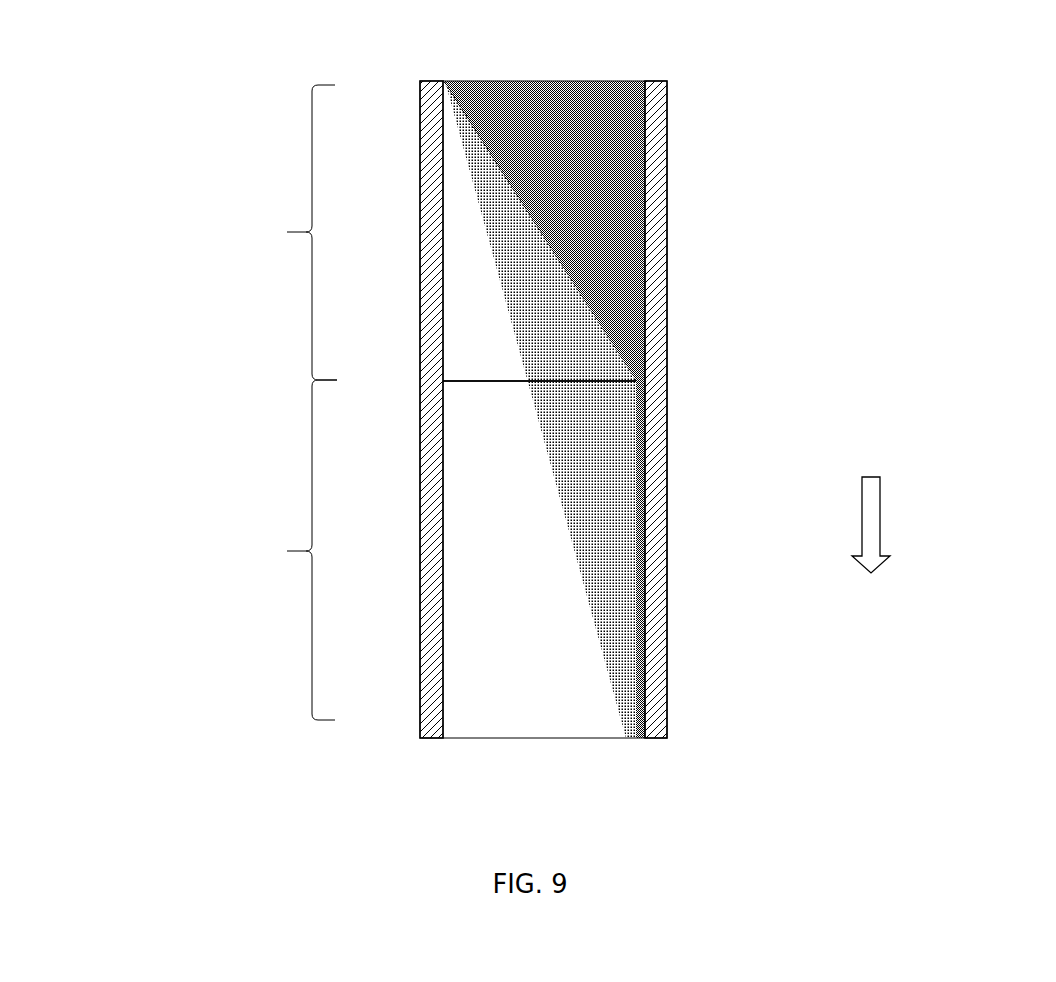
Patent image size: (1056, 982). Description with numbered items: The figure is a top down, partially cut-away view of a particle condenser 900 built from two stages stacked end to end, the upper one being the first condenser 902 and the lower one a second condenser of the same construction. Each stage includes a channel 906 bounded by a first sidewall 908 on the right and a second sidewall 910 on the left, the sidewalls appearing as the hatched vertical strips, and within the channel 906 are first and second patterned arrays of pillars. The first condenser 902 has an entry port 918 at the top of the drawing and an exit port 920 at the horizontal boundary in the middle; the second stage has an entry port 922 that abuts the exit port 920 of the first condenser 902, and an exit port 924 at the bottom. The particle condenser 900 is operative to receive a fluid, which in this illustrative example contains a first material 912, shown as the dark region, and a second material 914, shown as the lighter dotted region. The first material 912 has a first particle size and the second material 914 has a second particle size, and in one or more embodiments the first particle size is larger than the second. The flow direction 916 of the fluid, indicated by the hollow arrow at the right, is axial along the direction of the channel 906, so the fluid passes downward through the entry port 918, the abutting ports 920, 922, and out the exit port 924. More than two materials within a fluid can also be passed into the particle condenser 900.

The particle condenser 900 is at (878, 212).
The first condenser 902 is at (280, 402).
The channel 906 is at (482, 518).
The first sidewall 908 is at (660, 98).
The second sidewall 910 is at (420, 81).
The first material 912 is at (657, 557).
The second material 914 is at (570, 347).
The flow direction 916 is at (890, 557).
The entry port 918 is at (530, 80).
The exit port 920 is at (497, 381).
The entry port 922 is at (505, 382).
The exit port 924 is at (487, 739).